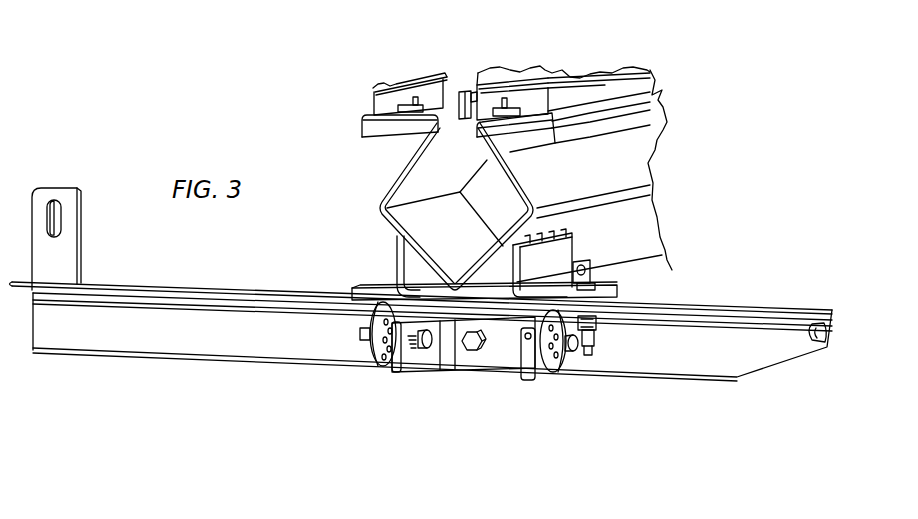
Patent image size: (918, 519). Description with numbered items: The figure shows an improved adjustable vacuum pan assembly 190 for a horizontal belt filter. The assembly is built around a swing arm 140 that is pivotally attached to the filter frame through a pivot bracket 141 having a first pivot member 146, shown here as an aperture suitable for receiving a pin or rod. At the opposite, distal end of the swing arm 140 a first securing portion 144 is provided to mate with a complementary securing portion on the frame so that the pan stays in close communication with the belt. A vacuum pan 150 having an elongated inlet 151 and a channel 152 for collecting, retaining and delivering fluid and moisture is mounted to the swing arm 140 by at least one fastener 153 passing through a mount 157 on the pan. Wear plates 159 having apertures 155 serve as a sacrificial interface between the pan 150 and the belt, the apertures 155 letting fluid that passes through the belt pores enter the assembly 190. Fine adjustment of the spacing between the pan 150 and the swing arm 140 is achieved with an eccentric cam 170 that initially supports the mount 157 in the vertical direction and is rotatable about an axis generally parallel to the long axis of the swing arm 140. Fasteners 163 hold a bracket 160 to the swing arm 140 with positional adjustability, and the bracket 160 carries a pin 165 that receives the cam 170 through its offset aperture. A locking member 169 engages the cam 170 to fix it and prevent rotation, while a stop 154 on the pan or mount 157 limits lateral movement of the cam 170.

The adjustable vacuum pan assembly 190 is at (221, 85).
The swing arm 140 is at (421, 331).
The pivot bracket 141 is at (55, 181).
The first pivot member 146 is at (60, 218).
The first securing portion 144 is at (820, 339).
The vacuum pan 150 is at (619, 169).
The elongated inlet 151 is at (458, 104).
The channel 152 is at (447, 173).
The fastener 153 is at (601, 340).
The stop 154 is at (591, 315).
The apertures 155 is at (471, 94).
The mount 157 is at (393, 276).
The wear plate 159 is at (378, 101).
The bracket 160 is at (490, 357).
The fasteners 163 is at (470, 344).
The pin 165 is at (428, 341).
The locking member 169 is at (405, 345).
The cam 170 is at (373, 350).